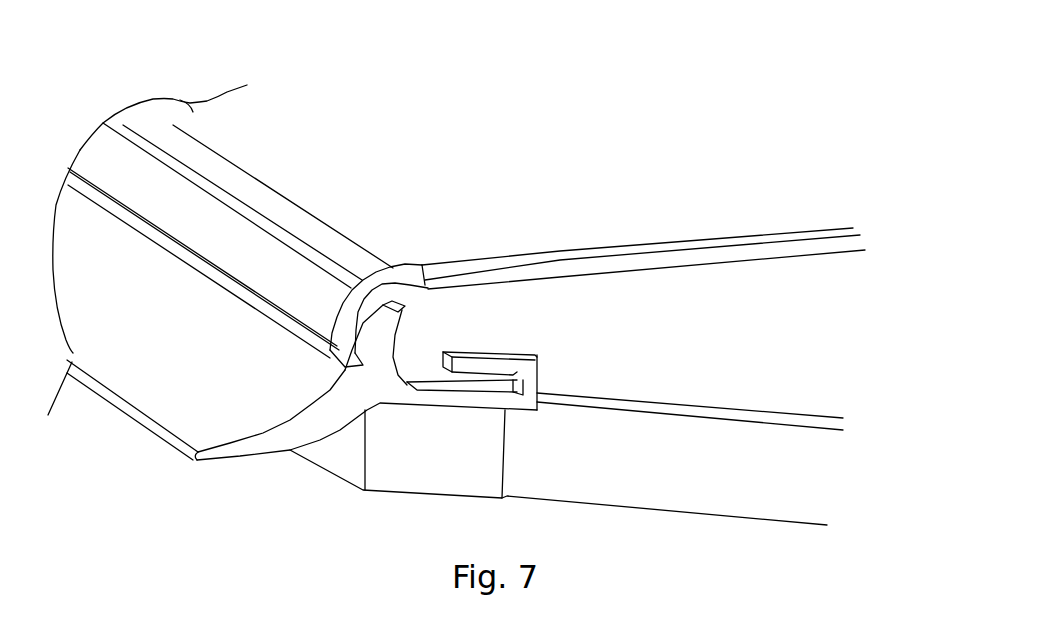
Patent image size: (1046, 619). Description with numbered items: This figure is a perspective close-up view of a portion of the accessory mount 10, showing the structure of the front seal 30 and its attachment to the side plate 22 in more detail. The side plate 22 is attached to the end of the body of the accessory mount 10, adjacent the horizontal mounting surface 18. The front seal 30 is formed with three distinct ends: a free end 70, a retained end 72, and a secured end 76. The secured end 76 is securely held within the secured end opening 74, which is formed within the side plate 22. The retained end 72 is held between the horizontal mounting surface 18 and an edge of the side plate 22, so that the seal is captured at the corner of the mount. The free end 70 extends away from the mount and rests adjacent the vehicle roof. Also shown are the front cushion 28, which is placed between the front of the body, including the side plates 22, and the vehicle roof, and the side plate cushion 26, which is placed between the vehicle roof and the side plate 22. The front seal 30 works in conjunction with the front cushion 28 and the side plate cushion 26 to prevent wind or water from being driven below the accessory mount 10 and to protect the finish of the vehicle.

The accessory mount 10 is at (622, 116).
The horizontal mounting surface 18 is at (440, 223).
The side plate 22 is at (795, 308).
The side plate cushion 26 is at (772, 503).
The front cushion 28 is at (407, 483).
The front seal 30 is at (180, 468).
The free end 70 is at (258, 452).
The retained end 72 is at (395, 323).
The secured end opening 74 is at (473, 352).
The secured end 76 is at (515, 362).